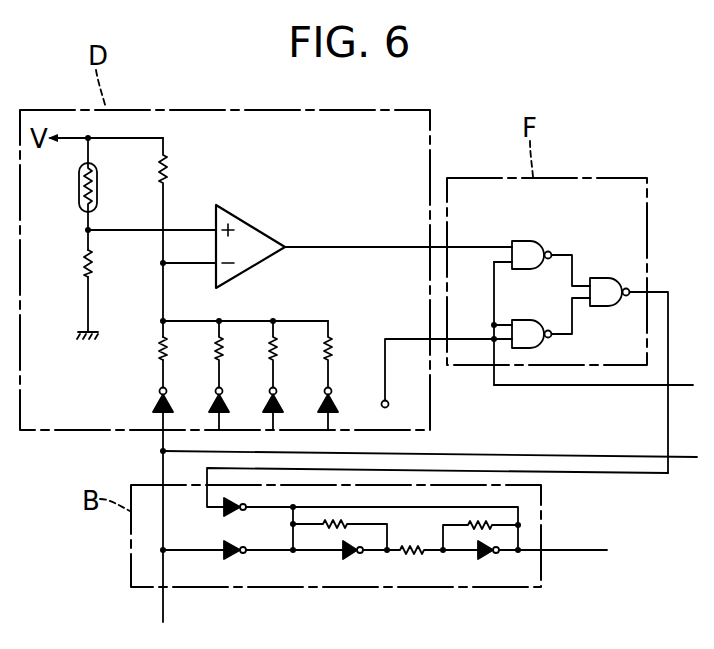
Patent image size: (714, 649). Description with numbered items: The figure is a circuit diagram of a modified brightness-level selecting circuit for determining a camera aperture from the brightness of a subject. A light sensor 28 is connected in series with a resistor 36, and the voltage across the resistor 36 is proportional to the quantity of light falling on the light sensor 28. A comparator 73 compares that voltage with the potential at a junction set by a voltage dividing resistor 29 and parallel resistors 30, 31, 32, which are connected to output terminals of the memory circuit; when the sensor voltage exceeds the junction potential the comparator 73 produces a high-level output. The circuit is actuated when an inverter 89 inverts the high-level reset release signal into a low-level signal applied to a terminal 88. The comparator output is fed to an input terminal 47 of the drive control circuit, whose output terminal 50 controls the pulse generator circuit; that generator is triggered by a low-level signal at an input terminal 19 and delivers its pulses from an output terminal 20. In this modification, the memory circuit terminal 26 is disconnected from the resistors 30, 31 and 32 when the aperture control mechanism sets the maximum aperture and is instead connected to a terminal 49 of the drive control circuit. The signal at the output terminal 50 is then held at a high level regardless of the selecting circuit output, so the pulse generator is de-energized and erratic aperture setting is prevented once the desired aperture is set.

The input terminal 19 is at (237, 555).
The output terminal 20 is at (577, 552).
The output terminal of the memory circuit 26 is at (384, 400).
The light sensor 28 is at (79, 190).
The voltage dividing resistor 29 is at (159, 349).
The resistor 30 is at (216, 347).
The resistor 31 is at (272, 352).
The resistor 32 is at (328, 352).
The resistor 36 is at (81, 264).
The input terminal 47 is at (472, 246).
The terminal of the drive control circuit 49 is at (494, 338).
The output terminal 50 is at (668, 290).
The comparator 73 is at (236, 217).
The terminal 88 is at (159, 391).
The inverter 89 is at (153, 409).